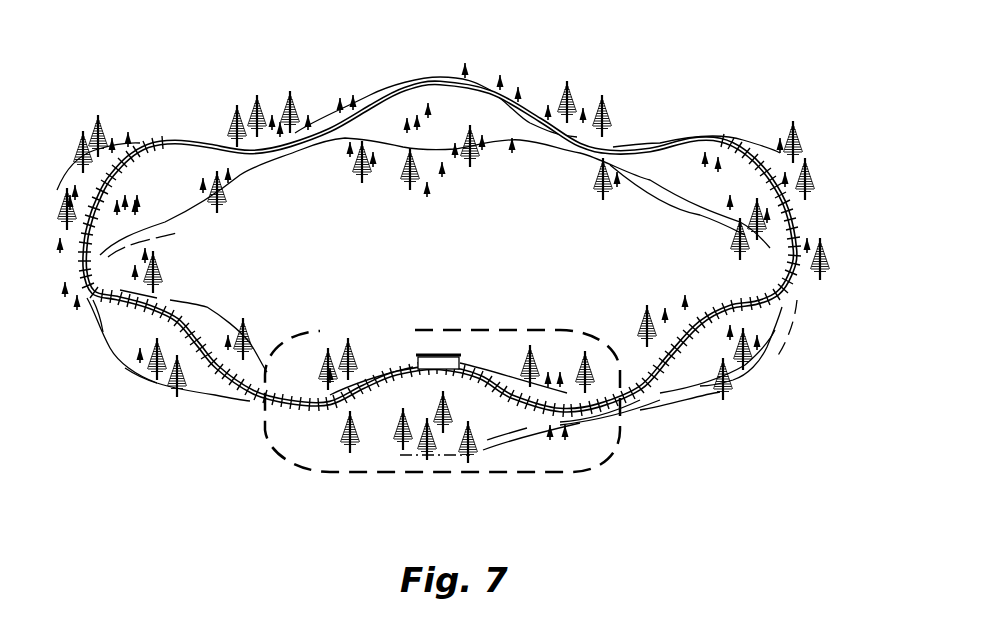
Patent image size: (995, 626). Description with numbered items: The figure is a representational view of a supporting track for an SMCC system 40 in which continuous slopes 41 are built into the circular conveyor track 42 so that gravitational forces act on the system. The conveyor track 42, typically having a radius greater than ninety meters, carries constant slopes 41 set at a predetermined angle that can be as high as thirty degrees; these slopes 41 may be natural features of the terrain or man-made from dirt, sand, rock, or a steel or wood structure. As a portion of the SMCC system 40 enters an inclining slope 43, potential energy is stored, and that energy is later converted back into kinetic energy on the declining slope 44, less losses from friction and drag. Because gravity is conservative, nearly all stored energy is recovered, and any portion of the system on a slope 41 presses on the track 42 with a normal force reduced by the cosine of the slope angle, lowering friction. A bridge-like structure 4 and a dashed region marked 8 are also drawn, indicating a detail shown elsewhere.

The SMCC system 40 is at (668, 60).
The slopes 41 is at (420, 78).
The bridge 4 is at (430, 352).
The conveyor track 42 is at (577, 413).
The inclining slope 43 is at (385, 392).
The declining slope 44 is at (510, 393).
The FIG. 8 detail region 8 is at (420, 330).